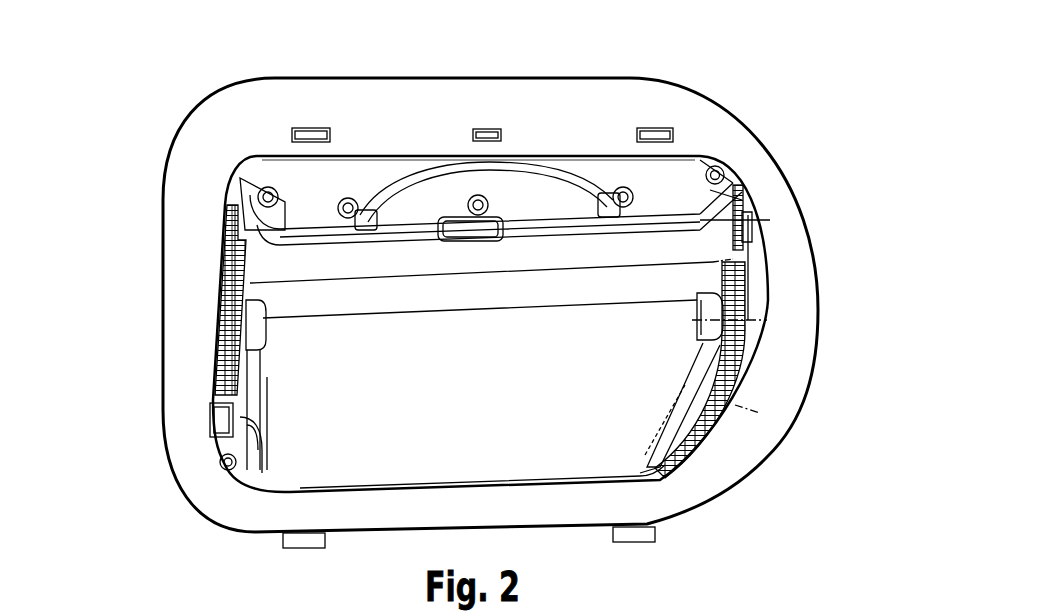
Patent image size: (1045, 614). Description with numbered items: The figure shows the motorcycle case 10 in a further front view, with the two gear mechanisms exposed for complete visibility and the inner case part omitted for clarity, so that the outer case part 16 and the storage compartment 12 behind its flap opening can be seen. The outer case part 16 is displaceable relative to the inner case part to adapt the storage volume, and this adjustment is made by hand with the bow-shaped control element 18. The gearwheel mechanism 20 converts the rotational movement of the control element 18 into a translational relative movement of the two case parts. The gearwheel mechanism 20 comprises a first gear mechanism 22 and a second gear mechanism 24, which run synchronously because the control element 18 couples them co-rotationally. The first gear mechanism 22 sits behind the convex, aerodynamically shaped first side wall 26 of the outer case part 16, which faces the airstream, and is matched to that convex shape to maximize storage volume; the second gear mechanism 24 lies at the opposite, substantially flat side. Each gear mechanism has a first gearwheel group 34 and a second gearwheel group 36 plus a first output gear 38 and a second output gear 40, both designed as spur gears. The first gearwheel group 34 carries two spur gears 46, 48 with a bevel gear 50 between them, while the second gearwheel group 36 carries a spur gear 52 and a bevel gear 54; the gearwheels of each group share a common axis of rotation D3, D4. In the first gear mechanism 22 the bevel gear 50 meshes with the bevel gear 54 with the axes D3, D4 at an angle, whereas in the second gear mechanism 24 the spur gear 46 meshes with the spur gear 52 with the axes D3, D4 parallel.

The motorcycle case 10 is at (195, 92).
The storage compartment 12 is at (303, 453).
The outer case part 16 is at (700, 118).
The bow-shaped control element 18 is at (667, 462).
The gearwheel mechanism 20 is at (676, 358).
The first gear mechanism 22 is at (817, 148).
The second gear mechanism 24 is at (173, 126).
The first side wall 26 is at (815, 347).
The first gearwheel group 34 is at (200, 332).
The second gearwheel group 36 is at (228, 266).
The first output gear 38 is at (227, 443).
The second output gear 40 is at (235, 201).
The spur gear 46 is at (222, 303).
The spur gear 48 is at (230, 357).
The bevel gear 50 is at (228, 314).
The spur gear 52 is at (232, 247).
The bevel gear 54 is at (258, 252).
The axis of rotation D3 is at (695, 318).
The axis of rotation D4 is at (688, 381).